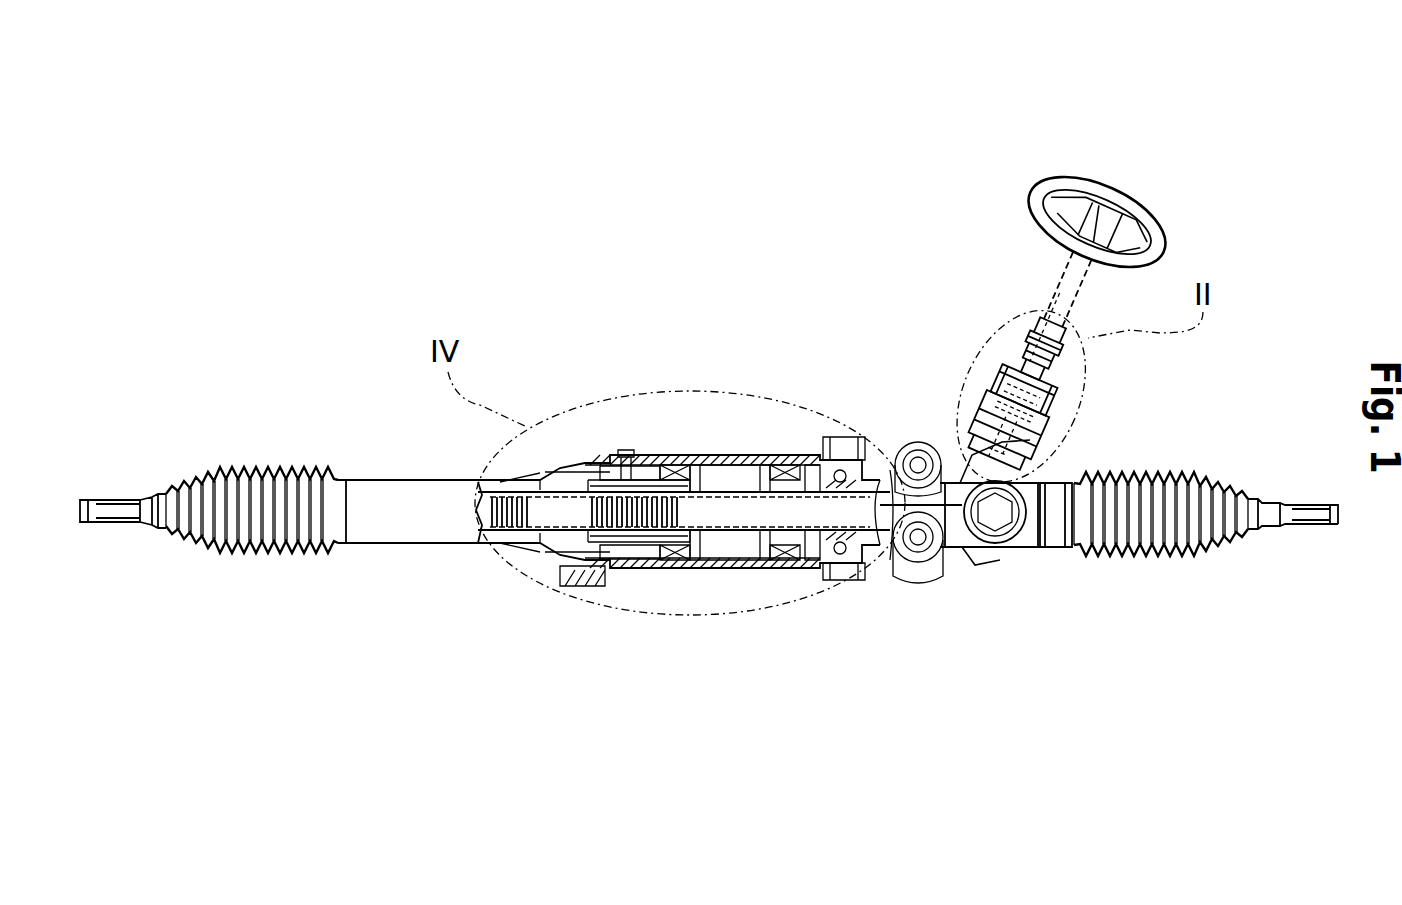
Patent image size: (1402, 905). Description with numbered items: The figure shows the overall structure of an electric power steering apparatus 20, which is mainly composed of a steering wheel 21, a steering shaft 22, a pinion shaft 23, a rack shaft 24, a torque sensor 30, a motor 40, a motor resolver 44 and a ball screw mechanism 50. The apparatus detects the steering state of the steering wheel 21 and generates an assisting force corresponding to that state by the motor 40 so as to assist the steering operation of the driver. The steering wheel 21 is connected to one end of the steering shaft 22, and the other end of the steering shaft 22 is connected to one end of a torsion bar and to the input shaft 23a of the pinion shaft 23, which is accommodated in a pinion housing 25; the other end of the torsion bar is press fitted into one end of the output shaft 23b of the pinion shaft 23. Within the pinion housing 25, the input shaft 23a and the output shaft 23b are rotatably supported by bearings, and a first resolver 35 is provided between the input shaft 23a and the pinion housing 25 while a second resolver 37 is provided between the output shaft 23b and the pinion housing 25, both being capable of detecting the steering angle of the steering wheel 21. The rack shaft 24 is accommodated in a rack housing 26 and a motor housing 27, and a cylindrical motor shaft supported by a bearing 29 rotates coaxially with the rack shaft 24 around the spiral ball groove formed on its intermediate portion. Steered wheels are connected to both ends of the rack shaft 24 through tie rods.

The electric power steering apparatus 20 is at (308, 155).
The steering wheel 21 is at (1156, 223).
The steering shaft 22 is at (1055, 295).
The pinion shaft 23 is at (1066, 340).
The input shaft 23a is at (1003, 385).
The output shaft 23b is at (965, 425).
The rack shaft 24 is at (482, 540).
The pinion housing 25 is at (976, 405).
The rack housing 26 is at (492, 475).
The motor housing 27 is at (735, 458).
The bearing 29 is at (812, 458).
The torque sensor 30 is at (1122, 418).
The first resolver 35 is at (1080, 405).
The second resolver 37 is at (1082, 434).
The motor 40 is at (677, 458).
The motor resolver 44 is at (790, 568).
The ball screw mechanism 50 is at (578, 462).